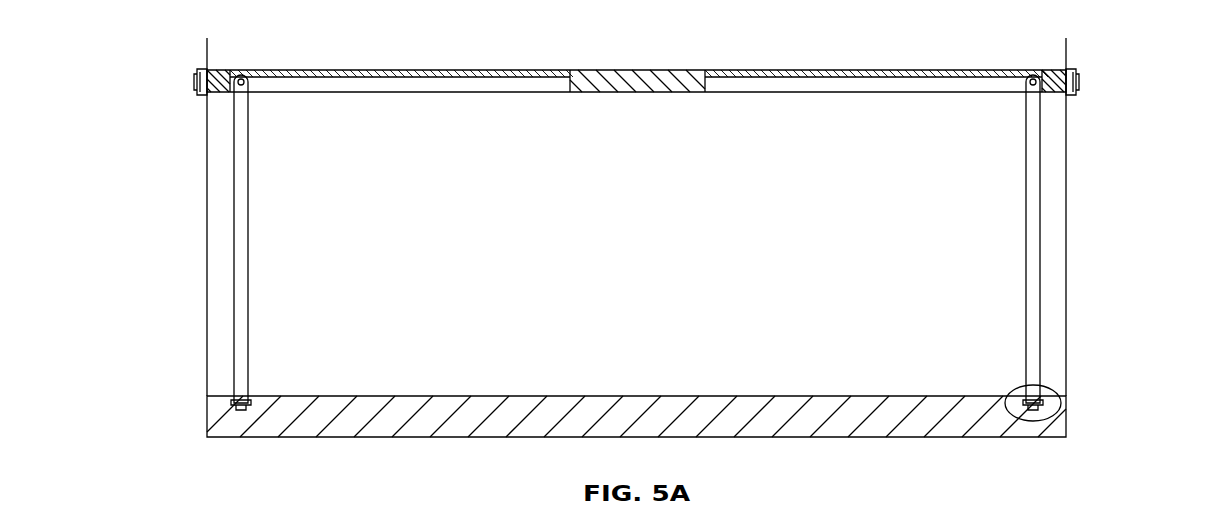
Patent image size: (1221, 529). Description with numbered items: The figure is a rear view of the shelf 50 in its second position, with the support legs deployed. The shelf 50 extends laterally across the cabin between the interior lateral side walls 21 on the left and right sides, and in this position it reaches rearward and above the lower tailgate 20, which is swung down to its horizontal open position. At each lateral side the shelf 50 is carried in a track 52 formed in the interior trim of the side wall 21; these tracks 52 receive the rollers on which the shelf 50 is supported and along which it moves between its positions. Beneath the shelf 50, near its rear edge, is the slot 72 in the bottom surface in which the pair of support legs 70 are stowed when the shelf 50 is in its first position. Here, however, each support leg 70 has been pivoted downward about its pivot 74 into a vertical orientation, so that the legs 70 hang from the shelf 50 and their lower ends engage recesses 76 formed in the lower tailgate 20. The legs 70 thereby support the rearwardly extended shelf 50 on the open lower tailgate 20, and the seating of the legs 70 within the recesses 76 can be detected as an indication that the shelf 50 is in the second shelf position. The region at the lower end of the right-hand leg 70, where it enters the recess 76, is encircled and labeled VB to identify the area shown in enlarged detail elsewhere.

The interior lateral side wall 21 is at (207, 50).
The lower tailgate 20 is at (833, 396).
The shelf 50 is at (652, 70).
The slot 72 is at (470, 83).
The support leg 70 is at (242, 253).
The pivot 74 is at (244, 82).
The recess 76 is at (236, 402).
The track 52 is at (196, 97).
The detail region VB is at (1048, 394).